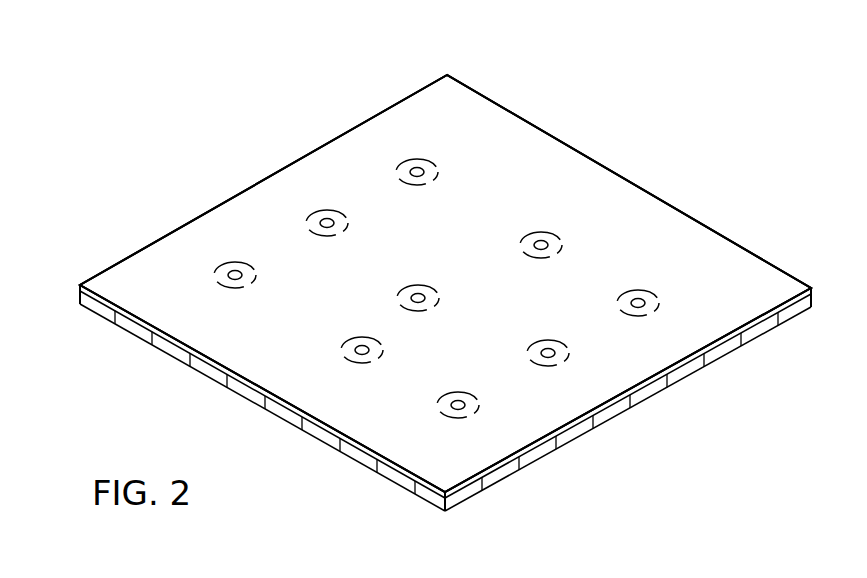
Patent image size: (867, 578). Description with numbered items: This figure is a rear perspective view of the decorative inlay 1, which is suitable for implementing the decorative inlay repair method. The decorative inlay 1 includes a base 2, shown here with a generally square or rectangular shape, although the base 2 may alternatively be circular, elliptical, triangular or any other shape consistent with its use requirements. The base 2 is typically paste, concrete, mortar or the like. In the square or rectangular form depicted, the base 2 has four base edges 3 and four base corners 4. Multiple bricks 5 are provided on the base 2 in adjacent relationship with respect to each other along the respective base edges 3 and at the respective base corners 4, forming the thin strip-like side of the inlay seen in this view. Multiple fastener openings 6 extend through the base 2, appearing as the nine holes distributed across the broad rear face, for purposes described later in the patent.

The decorative inlay 1 is at (218, 82).
The base 2 is at (262, 208).
The base edges 3 is at (213, 206).
The base corners 4 is at (447, 75).
The bricks 5 is at (320, 433).
The fastener openings 6 is at (417, 172).